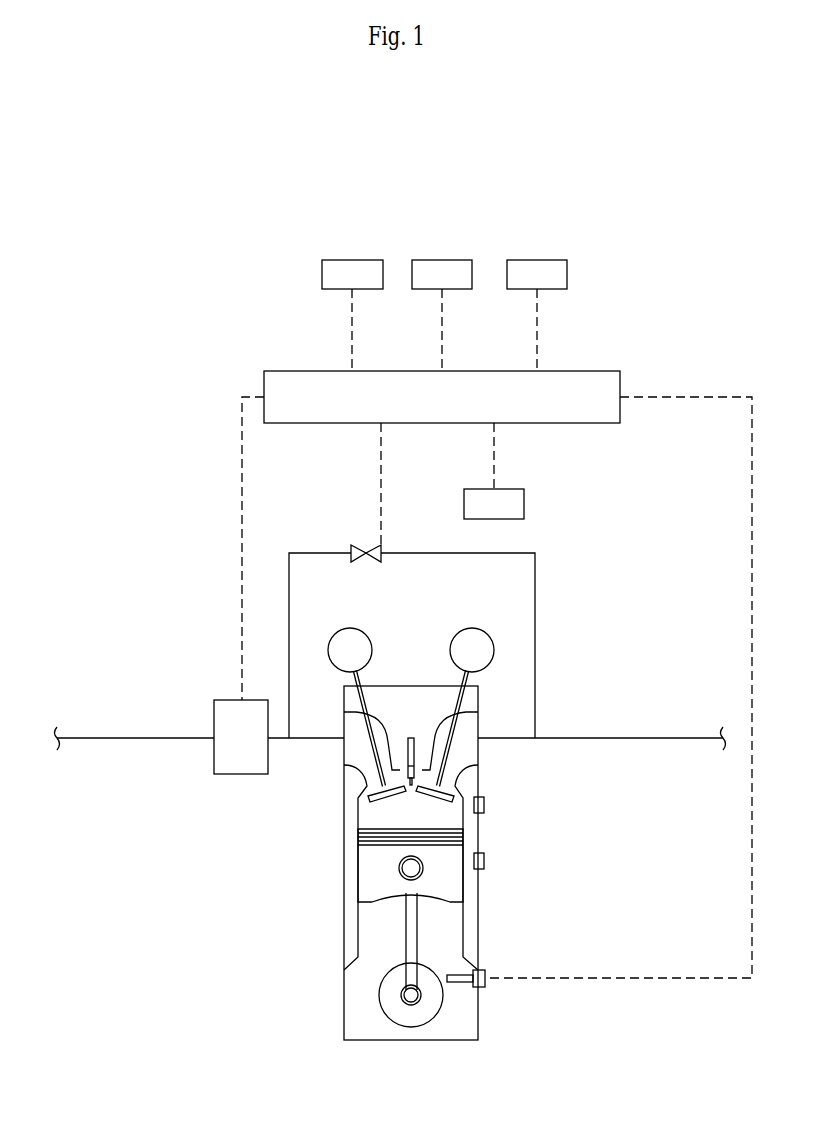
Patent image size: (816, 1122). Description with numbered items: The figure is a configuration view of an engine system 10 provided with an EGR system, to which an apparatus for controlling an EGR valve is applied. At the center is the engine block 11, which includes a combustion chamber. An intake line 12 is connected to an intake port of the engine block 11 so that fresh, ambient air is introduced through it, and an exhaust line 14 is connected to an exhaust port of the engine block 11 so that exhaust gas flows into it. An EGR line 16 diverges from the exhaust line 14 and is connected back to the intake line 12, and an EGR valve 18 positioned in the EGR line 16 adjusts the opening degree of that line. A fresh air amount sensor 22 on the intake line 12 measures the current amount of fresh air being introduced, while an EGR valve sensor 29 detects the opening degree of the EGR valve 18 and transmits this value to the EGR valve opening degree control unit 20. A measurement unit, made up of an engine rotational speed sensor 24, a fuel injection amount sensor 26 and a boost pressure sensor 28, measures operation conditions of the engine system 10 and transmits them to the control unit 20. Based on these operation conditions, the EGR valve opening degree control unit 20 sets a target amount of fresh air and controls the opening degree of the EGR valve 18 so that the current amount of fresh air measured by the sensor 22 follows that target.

The engine system 10 is at (318, 908).
The engine block 11 is at (480, 830).
The intake line 12 is at (146, 738).
The exhaust line 14 is at (602, 738).
The EGR line 16 is at (308, 553).
The EGR valve 18 is at (361, 545).
The EGR valve opening degree control unit 20 is at (605, 371).
The fresh air amount sensor 22 is at (243, 775).
The engine rotational speed sensor 24 is at (358, 260).
The fuel injection amount sensor 26 is at (449, 260).
The boost pressure sensor 28 is at (545, 260).
The EGR valve sensor 29 is at (524, 505).